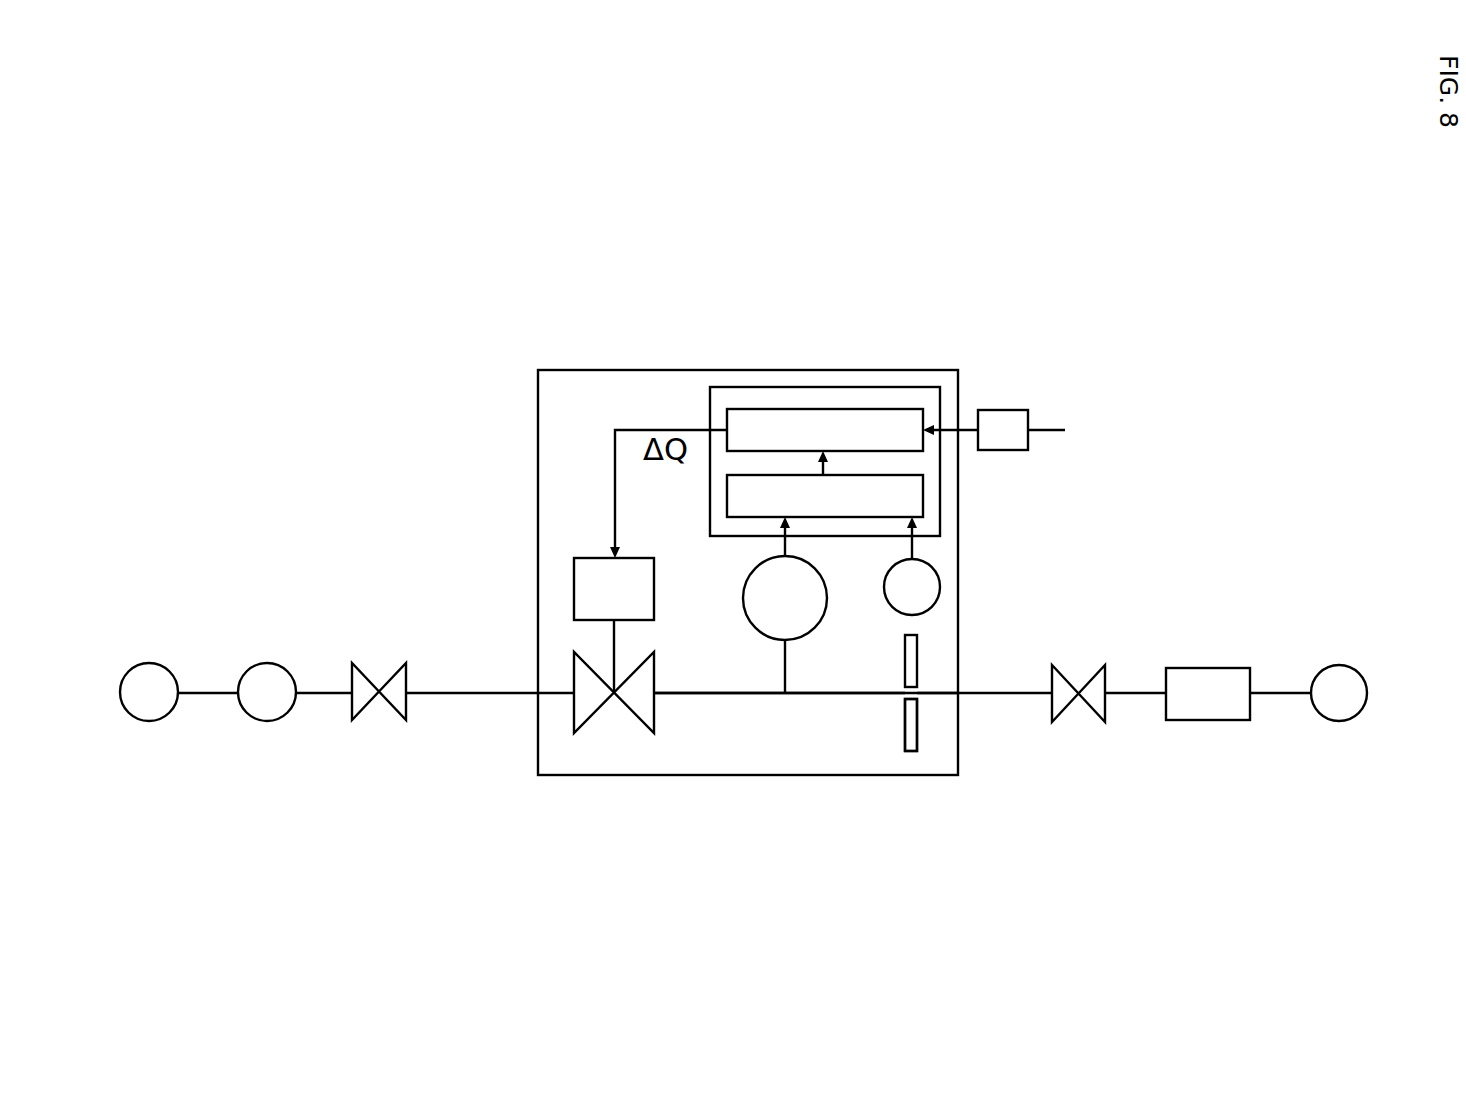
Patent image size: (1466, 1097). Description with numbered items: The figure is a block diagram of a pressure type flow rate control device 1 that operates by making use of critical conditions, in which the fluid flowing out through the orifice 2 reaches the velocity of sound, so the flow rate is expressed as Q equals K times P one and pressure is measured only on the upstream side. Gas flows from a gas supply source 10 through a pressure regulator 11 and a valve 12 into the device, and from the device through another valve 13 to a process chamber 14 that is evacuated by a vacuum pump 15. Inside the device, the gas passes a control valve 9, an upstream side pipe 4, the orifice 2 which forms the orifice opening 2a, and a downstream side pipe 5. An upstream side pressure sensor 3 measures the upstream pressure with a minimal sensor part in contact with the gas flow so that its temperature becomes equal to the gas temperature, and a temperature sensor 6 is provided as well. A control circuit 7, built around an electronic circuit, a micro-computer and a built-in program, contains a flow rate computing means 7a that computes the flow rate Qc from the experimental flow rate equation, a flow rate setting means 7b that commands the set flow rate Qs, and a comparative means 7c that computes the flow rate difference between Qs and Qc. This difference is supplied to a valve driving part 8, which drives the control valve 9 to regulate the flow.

The pressure type flow rate control device 1 is at (683, 368).
The orifice 2 is at (907, 722).
The orifice 2a is at (917, 698).
The upstream side pressure sensor 3 is at (748, 625).
The upstream side pipe 4 is at (738, 693).
The downstream side pipe 5 is at (945, 693).
The temperature sensor 6 is at (940, 582).
The control circuit 7 is at (940, 468).
The flow rate computing means 7a is at (923, 502).
The flow rate setting means 7b is at (1003, 410).
The comparative means 7c is at (849, 409).
The valve driving part 8 is at (590, 596).
The control valve 9 is at (590, 706).
The gas supply source 10 is at (147, 706).
The pressure regulator 11 is at (265, 706).
The valve 12 is at (363, 698).
The valve 13 is at (1090, 705).
The process chamber 14 is at (1208, 710).
The vacuum pump 15 is at (1335, 710).